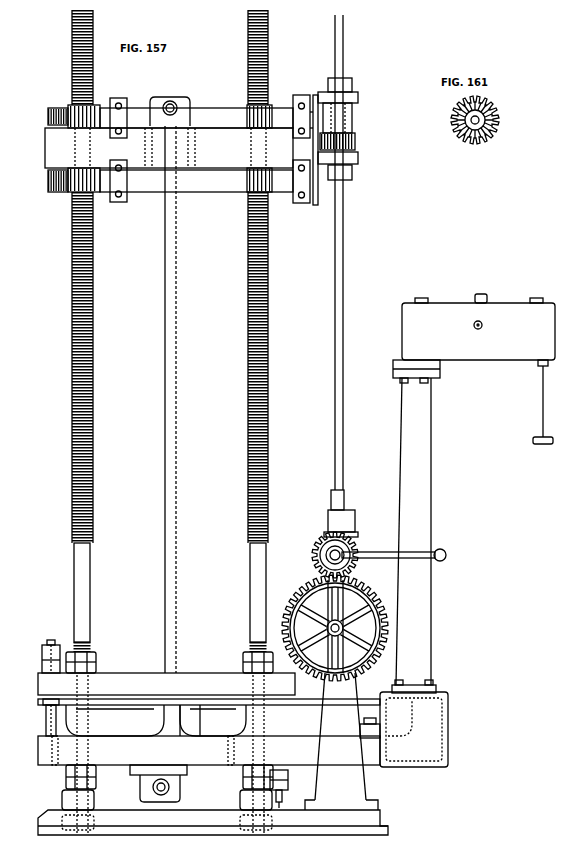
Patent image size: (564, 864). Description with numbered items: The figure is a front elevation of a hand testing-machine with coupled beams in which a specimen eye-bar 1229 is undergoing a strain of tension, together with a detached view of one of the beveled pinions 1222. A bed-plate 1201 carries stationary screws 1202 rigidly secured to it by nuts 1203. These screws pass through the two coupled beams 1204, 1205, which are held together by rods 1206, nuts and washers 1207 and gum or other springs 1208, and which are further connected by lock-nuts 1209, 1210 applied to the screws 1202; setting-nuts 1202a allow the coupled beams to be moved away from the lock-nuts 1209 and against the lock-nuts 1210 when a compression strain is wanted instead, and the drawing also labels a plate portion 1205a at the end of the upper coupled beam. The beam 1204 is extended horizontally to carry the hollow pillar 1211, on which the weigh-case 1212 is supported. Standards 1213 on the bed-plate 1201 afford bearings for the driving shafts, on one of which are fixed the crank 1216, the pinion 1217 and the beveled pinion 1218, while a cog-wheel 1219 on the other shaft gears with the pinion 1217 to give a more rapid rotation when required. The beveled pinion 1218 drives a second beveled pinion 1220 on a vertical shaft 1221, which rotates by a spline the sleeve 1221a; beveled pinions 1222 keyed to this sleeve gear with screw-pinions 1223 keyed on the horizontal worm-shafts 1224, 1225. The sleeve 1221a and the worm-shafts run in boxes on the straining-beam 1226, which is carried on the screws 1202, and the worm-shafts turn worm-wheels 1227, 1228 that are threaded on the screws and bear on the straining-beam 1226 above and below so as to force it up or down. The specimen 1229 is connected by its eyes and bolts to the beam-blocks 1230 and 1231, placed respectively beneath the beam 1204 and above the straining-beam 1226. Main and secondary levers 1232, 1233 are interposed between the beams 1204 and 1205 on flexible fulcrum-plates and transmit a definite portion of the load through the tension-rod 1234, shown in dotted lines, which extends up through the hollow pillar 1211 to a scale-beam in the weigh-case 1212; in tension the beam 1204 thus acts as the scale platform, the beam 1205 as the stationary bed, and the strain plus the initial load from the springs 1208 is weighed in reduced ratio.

In FIG. 157, the bed-plate 1201 is at (213, 822).
In FIG. 157, the stationary screws 1202 is at (170, 417).
In FIG. 157, the setting-nuts 1202a is at (167, 748).
In FIG. 157, the nuts 1203 is at (166, 810).
In FIG. 157, the beam 1204 is at (243, 729).
In FIG. 157, the beam 1205 is at (166, 684).
In FIG. 157, the plate extension 1205a is at (209, 695).
In FIG. 157, the rods 1206 is at (39, 717).
In FIG. 157, the nuts and washers 1207 is at (169, 724).
In FIG. 157, the springs 1208 is at (174, 717).
In FIG. 157, the lock-nuts 1209 is at (169, 662).
In FIG. 157, the lock-nuts 1210 is at (169, 777).
In FIG. 157, the hollow pillar 1211 is at (413, 531).
In FIG. 157, the weigh-case 1212 is at (474, 369).
In FIG. 157, the standards 1213 is at (341, 695).
In FIG. 157, the crank 1216 is at (394, 555).
In FIG. 157, the pinion 1217 is at (326, 558).
In FIG. 157, the beveled pinion 1218 is at (319, 552).
In FIG. 157, the cog-wheel 1219 is at (333, 626).
In FIG. 157, the second beveled pinion 1220 is at (355, 528).
In FIG. 157, the vertical shaft 1221 is at (354, 252).
In FIG. 157, the sleeve 1221a is at (353, 118).
In FIG. 157, the beveled pinions 1222 is at (358, 97).
In FIG. 161, the beveled pinions 1222 is at (489, 120).
In FIG. 157, the screw-pinions 1223 is at (318, 146).
In FIG. 157, the worm-shaft 1224 is at (196, 118).
In FIG. 157, the worm-shaft 1225 is at (196, 181).
In FIG. 157, the straining-beam 1226 is at (169, 148).
In FIG. 157, the worm-wheel 1227 is at (147, 112).
In FIG. 157, the worm-wheel 1228 is at (144, 185).
In FIG. 157, the specimen eye-bar 1229 is at (184, 399).
In FIG. 157, the beam-block 1230 is at (158, 785).
In FIG. 157, the beam-block 1231 is at (170, 101).
In FIG. 157, the main lever 1232 is at (192, 720).
In FIG. 157, the secondary lever 1233 is at (156, 720).
In FIG. 157, the tension-rod 1234 is at (414, 681).